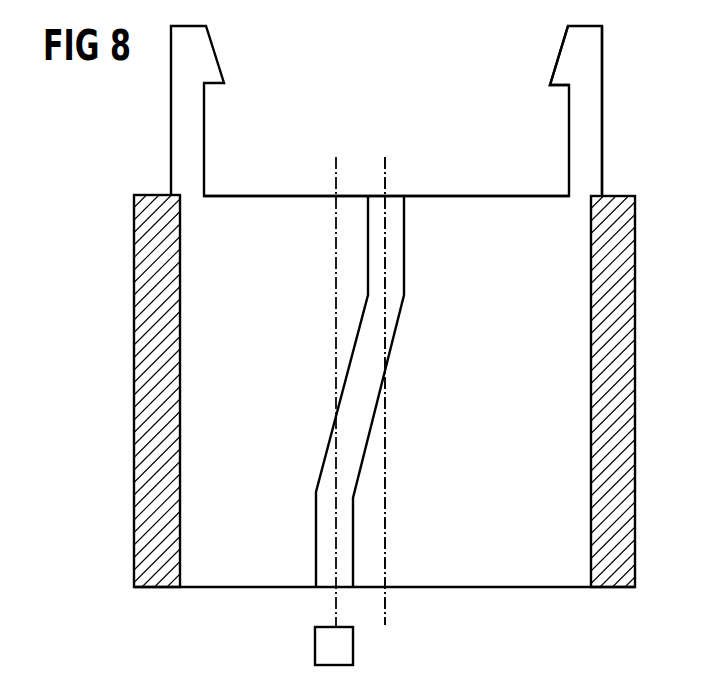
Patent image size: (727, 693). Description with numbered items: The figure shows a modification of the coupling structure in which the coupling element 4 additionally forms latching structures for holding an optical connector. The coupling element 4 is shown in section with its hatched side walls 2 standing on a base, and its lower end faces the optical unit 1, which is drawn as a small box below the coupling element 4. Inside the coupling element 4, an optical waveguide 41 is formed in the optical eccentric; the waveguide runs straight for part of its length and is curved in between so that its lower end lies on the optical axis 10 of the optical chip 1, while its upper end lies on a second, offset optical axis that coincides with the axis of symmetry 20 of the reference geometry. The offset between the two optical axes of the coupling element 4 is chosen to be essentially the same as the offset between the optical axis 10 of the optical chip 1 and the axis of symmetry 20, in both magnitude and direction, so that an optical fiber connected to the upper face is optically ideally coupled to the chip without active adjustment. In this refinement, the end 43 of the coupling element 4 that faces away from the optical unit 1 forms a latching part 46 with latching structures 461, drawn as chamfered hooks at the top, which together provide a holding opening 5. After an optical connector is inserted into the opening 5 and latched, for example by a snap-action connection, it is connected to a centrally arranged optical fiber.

The optical unit 1 is at (315, 645).
The housing wall 2 is at (625, 402).
The coupling element 4 is at (455, 580).
The holding opening 5 is at (432, 132).
The optical axis of the optical chip 10 is at (334, 285).
The axis of symmetry of the reference geometry 20 is at (386, 503).
The optical waveguide 41 is at (362, 422).
The second face 43 is at (481, 194).
The latching part 46 is at (592, 114).
The latching structures 461 is at (566, 67).